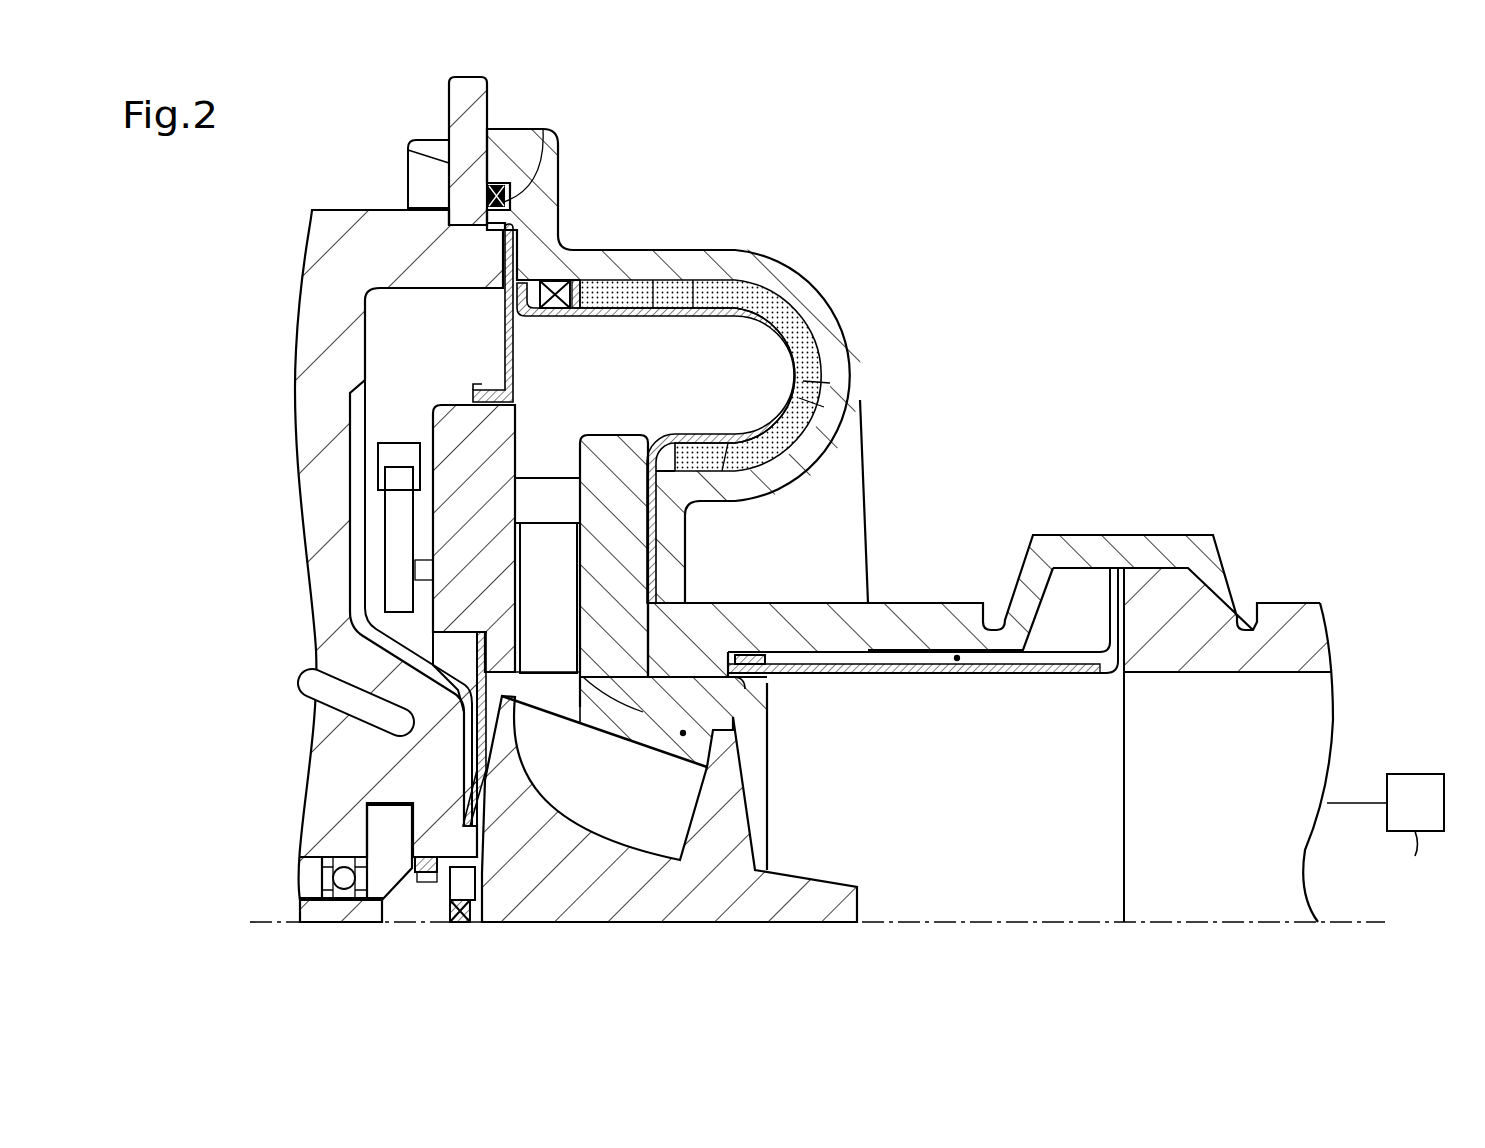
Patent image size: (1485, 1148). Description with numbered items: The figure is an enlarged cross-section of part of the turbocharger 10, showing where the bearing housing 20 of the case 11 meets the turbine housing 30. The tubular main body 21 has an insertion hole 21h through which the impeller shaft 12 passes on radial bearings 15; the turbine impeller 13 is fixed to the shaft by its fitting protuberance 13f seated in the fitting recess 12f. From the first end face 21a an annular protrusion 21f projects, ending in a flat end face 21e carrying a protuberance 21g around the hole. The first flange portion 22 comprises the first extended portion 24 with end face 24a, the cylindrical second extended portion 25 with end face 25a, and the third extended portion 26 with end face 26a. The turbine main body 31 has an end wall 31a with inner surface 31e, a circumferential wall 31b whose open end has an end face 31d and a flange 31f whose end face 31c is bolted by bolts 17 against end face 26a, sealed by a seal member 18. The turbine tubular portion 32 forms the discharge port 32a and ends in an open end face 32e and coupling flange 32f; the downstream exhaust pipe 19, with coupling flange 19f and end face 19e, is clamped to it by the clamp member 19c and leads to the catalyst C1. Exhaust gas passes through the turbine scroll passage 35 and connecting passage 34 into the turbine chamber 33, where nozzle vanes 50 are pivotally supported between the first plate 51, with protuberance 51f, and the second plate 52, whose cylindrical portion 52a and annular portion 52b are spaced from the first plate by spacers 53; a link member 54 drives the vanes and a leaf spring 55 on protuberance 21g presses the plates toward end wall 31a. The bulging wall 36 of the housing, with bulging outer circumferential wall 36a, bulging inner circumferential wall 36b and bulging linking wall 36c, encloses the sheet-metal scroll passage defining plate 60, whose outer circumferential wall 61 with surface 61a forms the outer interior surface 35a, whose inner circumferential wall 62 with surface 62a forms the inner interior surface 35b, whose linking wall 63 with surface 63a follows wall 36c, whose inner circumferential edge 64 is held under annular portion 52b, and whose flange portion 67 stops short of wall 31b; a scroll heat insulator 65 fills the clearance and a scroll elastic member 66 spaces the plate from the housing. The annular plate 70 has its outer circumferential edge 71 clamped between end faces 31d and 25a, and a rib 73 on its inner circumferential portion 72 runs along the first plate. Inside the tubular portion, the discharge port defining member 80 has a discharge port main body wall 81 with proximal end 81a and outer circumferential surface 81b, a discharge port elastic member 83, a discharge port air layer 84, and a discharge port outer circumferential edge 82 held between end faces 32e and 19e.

The turbocharger 10 is at (891, 129).
The case 11 is at (316, 199).
The impeller shaft 12 is at (300, 906).
The fitting recess 12f is at (426, 857).
The turbine impeller 13 is at (830, 885).
The fitting protuberance 13f is at (450, 906).
The radial bearings 15 is at (333, 857).
The bolts 17 is at (433, 143).
The seal member 18 is at (545, 130).
The downstream exhaust pipe 19 is at (1275, 605).
The clamp member 19c is at (1120, 535).
The end face 19e is at (1103, 655).
The coupling flange 19f is at (1180, 575).
The bearing housing 20 is at (350, 208).
The main body 21 is at (312, 792).
The first end face 21a is at (352, 578).
The end face 21e is at (545, 795).
The protrusion 21f is at (378, 712).
The protuberance 21g is at (485, 840).
The insertion hole 21h is at (312, 870).
The first flange portion 22 is at (310, 224).
The first extended portion 24 is at (312, 385).
The end face 24a is at (372, 338).
The second extended portion 25 is at (420, 250).
The end face 25a is at (500, 285).
The third extended portion 26 is at (449, 95).
The end face 26a is at (502, 128).
The turbine housing 30 is at (557, 135).
The turbine main body 31 is at (745, 250).
The end wall 31a is at (690, 557).
The circumferential wall 31b is at (562, 245).
The end face 31c is at (415, 162).
The end face 31d is at (515, 218).
The inner surface 31e is at (635, 695).
The flange 31f is at (558, 175).
The turbine tubular portion 32 is at (900, 600).
The discharge port 32a is at (1090, 835).
The open end face 32e is at (1126, 652).
The coupling flange 32f is at (1097, 560).
The turbine chamber 33 is at (683, 733).
The connecting passage 34 is at (520, 538).
The turbine scroll passage 35 is at (827, 310).
The outer circumferential interior surface 35a is at (632, 320).
The inner circumferential interior surface 35b is at (668, 432).
The bulging wall 36 is at (806, 287).
The bulging outer circumferential wall 36a is at (713, 268).
The bulging inner circumferential wall 36b is at (735, 497).
The bulging linking wall 36c is at (857, 362).
The nozzle vanes 50 is at (522, 589).
The first plate 51 is at (352, 522).
The protuberance 51f is at (440, 648).
The second plate 52 is at (600, 690).
The cylindrical portion 52a is at (725, 708).
The annular portion 52b is at (578, 478).
The spacers 53 is at (515, 500).
The link member 54 is at (380, 480).
The leaf spring 55 is at (480, 752).
The scroll passage defining plate 60 is at (785, 275).
The outer circumferential wall 61 is at (697, 305).
The outer circumferential surface 61a is at (653, 300).
The inner circumferential wall 62 is at (705, 440).
The outer circumferential surface 62a is at (805, 478).
The linking wall 63 is at (838, 382).
The outer circumferential surface 63a is at (855, 398).
The inner circumferential edge 64 is at (660, 580).
The scroll heat insulator 65 is at (815, 325).
The scroll elastic member 66 is at (555, 308).
The flange portion 67 is at (502, 300).
The annular plate 70 is at (505, 338).
The outer circumferential edge 71 is at (505, 252).
The inner circumferential portion 72 is at (518, 388).
The rib 73 is at (486, 390).
The discharge port defining member 80 is at (907, 603).
The discharge port main body wall 81 is at (882, 668).
The proximal end 81a is at (766, 680).
The outer circumferential surface 81b is at (835, 665).
The discharge port outer circumferential edge 82 is at (1120, 590).
The discharge port elastic member 83 is at (750, 655).
The discharge port air layer 84 is at (957, 658).
The catalyst C1 is at (1385, 832).